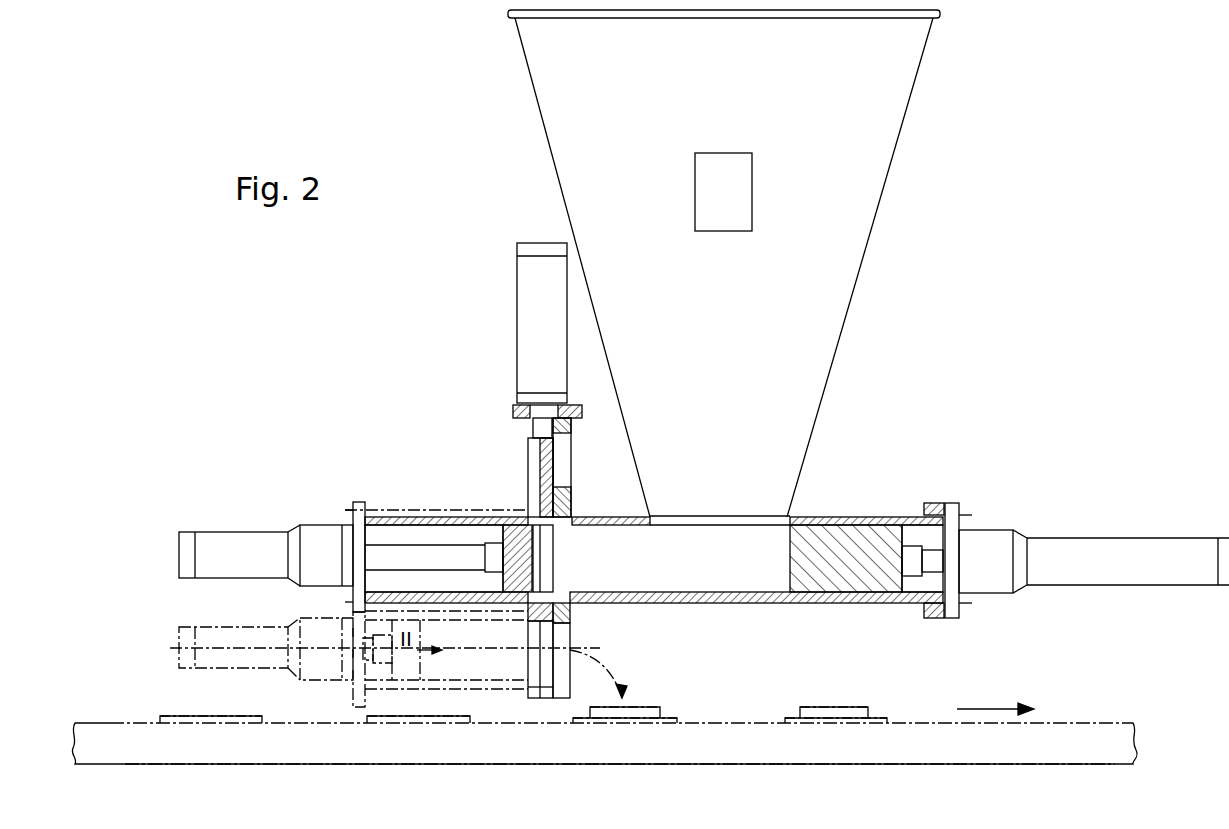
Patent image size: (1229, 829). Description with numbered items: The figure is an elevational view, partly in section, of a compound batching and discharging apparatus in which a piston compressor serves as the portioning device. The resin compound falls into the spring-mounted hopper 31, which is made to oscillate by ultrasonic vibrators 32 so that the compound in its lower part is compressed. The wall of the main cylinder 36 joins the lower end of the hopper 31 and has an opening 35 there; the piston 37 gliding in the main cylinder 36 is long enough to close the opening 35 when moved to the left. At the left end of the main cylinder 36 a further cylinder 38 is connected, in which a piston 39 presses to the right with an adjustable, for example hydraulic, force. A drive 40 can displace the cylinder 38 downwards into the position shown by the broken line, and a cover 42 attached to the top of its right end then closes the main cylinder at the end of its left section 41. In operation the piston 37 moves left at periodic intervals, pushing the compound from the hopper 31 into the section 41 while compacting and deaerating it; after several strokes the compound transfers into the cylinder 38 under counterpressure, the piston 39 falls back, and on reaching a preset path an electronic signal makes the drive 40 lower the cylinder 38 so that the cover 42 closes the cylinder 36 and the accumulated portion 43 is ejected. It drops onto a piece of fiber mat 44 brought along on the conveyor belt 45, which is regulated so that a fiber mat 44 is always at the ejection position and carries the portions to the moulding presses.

The spring-mounted hopper 31 is at (900, 73).
The ultrasonic vibrator 32 is at (742, 192).
The opening 35 is at (725, 512).
The main cylinder 36 is at (720, 553).
The piston 37 is at (857, 557).
The further cylinder 38 is at (428, 517).
The piston 39 is at (518, 522).
The drive 40 is at (530, 283).
The left section 41 is at (606, 569).
The cover 42 is at (537, 448).
The portion 43 is at (645, 707).
The piece of fiber mat 44 is at (195, 720).
The conveyor belt 45 is at (105, 722).